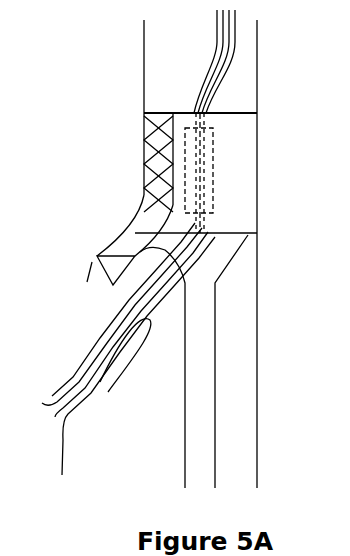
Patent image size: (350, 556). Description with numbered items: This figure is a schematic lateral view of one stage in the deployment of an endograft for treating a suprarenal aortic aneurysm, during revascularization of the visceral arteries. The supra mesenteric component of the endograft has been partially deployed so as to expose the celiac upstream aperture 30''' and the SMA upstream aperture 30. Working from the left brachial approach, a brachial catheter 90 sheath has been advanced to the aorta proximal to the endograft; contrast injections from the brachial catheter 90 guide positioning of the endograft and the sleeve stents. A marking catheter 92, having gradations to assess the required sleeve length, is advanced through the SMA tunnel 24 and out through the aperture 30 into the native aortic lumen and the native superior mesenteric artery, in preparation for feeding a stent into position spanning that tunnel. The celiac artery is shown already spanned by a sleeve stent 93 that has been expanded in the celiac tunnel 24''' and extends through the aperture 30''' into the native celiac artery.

The brachial catheter 90 is at (218, 40).
The celiac tunnel 24''' is at (111, 116).
The celiac upstream aperture 30''' is at (103, 209).
The sleeve stent 93 is at (118, 244).
The SMA tunnel 24 is at (255, 164).
The SMA upstream aperture 30 is at (261, 173).
The marking catheter 92 is at (97, 333).